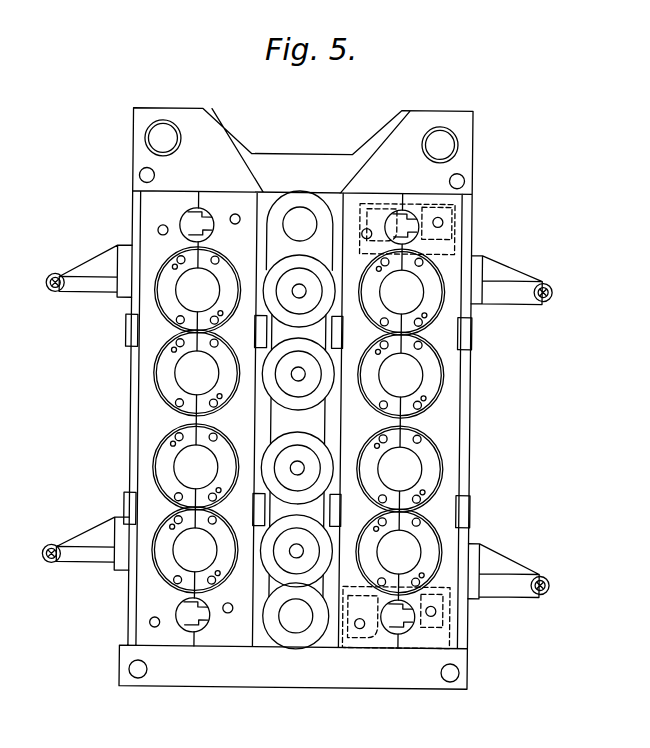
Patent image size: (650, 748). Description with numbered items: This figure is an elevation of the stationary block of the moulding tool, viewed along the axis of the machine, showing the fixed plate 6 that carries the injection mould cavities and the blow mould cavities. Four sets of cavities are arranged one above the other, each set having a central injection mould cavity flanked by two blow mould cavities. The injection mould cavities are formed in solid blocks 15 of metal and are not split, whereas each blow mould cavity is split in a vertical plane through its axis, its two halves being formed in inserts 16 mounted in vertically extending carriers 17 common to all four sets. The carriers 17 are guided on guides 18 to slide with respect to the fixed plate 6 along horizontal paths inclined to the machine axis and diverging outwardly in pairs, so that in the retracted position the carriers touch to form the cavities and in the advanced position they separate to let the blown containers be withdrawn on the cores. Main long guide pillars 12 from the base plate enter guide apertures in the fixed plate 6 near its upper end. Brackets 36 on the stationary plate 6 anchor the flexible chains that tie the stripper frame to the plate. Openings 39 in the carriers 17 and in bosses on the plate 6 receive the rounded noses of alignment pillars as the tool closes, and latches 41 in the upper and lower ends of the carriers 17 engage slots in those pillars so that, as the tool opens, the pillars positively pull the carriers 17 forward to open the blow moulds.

The fixed plate 6 is at (140, 114).
The main long guide pillars 12 is at (163, 133).
The solid blocks 15 is at (323, 275).
The inserts 16 is at (230, 285).
The carriers 17 is at (230, 200).
The guides 18 is at (125, 330).
The brackets 36 is at (83, 265).
The openings 39 is at (182, 215).
The latches 41 is at (187, 238).